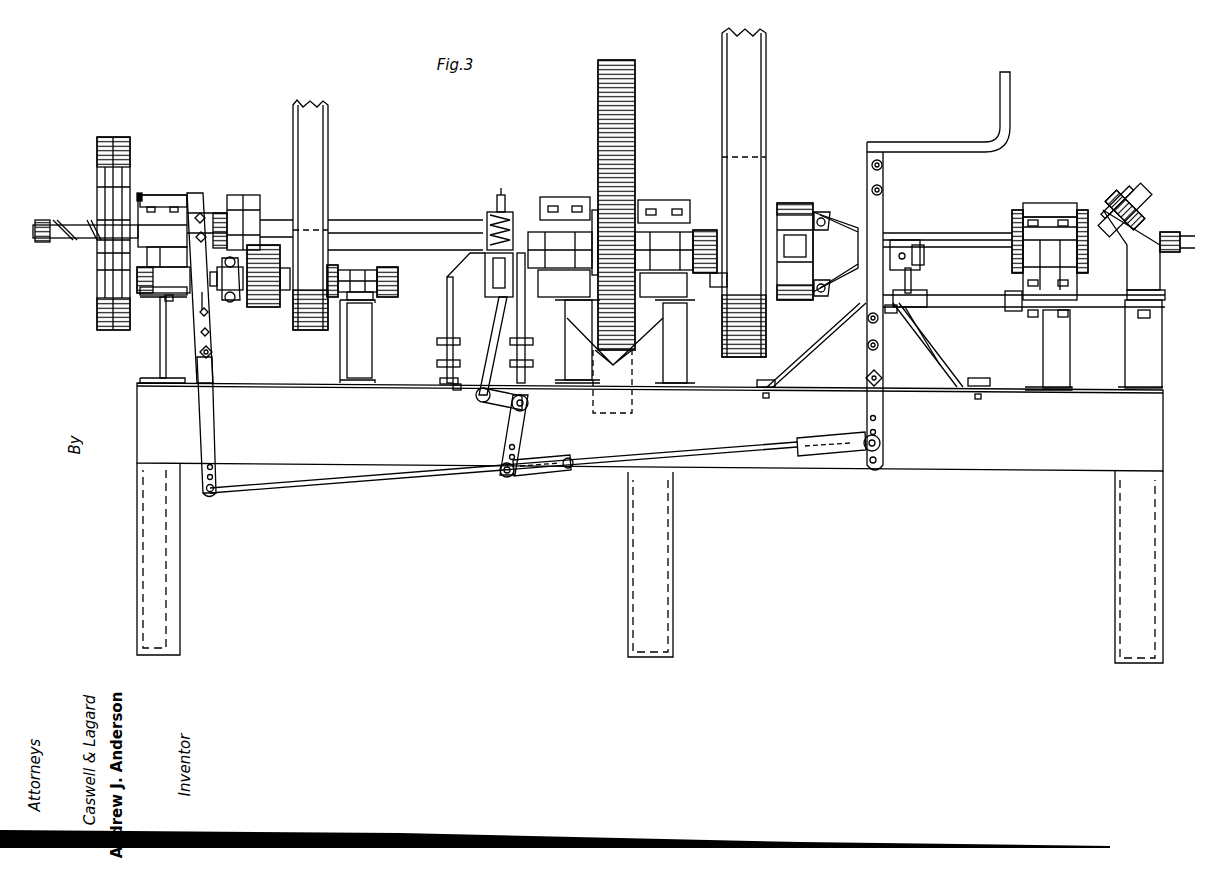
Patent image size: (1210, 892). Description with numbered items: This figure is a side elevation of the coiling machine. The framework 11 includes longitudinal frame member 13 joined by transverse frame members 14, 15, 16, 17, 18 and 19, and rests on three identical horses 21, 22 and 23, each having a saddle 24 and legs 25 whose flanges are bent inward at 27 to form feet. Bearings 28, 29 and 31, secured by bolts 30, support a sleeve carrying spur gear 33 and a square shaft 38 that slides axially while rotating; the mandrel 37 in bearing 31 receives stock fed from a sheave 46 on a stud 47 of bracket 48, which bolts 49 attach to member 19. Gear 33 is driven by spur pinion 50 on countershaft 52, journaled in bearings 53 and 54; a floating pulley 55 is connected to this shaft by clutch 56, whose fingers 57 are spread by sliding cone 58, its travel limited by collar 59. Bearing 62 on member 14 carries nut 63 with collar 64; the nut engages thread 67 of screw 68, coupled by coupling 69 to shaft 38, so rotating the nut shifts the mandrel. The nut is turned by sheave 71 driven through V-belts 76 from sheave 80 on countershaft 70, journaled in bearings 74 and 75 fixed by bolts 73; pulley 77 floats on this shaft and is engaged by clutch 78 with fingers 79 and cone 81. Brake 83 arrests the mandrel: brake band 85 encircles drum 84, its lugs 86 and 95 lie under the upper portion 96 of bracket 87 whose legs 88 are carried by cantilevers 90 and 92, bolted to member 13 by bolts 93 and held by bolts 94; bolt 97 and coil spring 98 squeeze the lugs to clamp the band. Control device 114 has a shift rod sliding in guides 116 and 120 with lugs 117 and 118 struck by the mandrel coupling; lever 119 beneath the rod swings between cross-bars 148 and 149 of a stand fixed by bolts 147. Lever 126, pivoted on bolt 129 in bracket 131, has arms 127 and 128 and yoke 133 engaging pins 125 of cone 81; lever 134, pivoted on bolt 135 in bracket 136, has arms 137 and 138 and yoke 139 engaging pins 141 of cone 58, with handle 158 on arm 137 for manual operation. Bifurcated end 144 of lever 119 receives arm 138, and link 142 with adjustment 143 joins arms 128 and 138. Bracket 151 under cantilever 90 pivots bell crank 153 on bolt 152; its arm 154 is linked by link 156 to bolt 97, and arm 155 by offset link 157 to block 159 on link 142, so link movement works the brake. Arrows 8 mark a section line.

The direction arrow 8 is at (704, 318).
The framework 11 is at (1020, 473).
The longitudinal frame member 13 is at (395, 455).
The transverse frame member 14 is at (160, 358).
The transverse frame member 15 is at (350, 340).
The transverse frame member 16 is at (572, 382).
The transverse frame member 17 is at (672, 382).
The transverse frame member 18 is at (1045, 378).
The transverse frame member 19 is at (1128, 375).
The horse 21 is at (182, 596).
The horse 22 is at (660, 598).
The horse 23 is at (1125, 572).
The saddle 24 is at (159, 559).
The leg 25 is at (172, 555).
The feet 27 is at (166, 645).
The bearing 28 is at (568, 198).
The bearing 29 is at (660, 205).
The bolts 30 is at (1063, 318).
The bearing 31 is at (1046, 210).
The spur gear 33 is at (618, 85).
The mandrel 37 is at (980, 232).
The square shaft 38 is at (395, 222).
The sheave 46 is at (1118, 195).
The stud 47 is at (1135, 200).
The bracket 48 is at (1137, 268).
The bolts 49 is at (1145, 320).
The spur pinion 50 is at (622, 308).
The countershaft 52 is at (922, 252).
The bearing 53 is at (600, 235).
The bearing 54 is at (690, 245).
The pulley 55 is at (766, 160).
The clutch 56 is at (790, 205).
The operating fingers 57 is at (823, 216).
The sliding cone 58 is at (855, 240).
The collar 59 is at (900, 244).
The bearing 62 is at (175, 200).
The nut 63 is at (140, 195).
The collar 64 is at (150, 200).
The thread 67 is at (92, 225).
The screw 68 is at (62, 245).
The coupling 69 is at (245, 200).
The countershaft 70 is at (393, 268).
The sheave 71 is at (100, 145).
The bolts 73 is at (168, 305).
The bearing 74 is at (160, 292).
The bearing 75 is at (352, 270).
The V-belts 76 is at (122, 140).
The pulley 77 is at (335, 268).
The clutch 78 is at (262, 270).
The operating fingers 79 is at (224, 250).
The sheave 80 is at (100, 285).
The sliding cone 81 is at (215, 290).
The brake 83 is at (522, 228).
The brake drum 84 is at (495, 222).
The brake band 85 is at (499, 198).
The lug 86 is at (540, 235).
The bracket 87 is at (456, 268).
The legs 88 is at (448, 290).
The cantilever 90 is at (530, 358).
The cantilever 92 is at (442, 382).
The bolts 93 is at (458, 392).
The bolts 94 is at (440, 363).
The lug 95 is at (492, 282).
The upper portion 96 is at (490, 245).
The bolt 97 is at (510, 222).
The coil spring 98 is at (497, 230).
The control device 114 is at (883, 446).
The guide 116 is at (690, 340).
The lug 117 is at (718, 275).
The lug 118 is at (914, 272).
The lever 119 is at (893, 312).
The guide 120 is at (1012, 312).
The pins 125 is at (202, 300).
The lever 126 is at (205, 410).
The upwardly extending arm 127 is at (197, 210).
The downwardly extending arm 128 is at (214, 440).
The bolt 129 is at (208, 360).
The bracket 131 is at (175, 378).
The yoke portion 133 is at (203, 345).
The lever 134 is at (866, 340).
The bolt 135 is at (884, 378).
The bracket 136 is at (866, 376).
The upwardly extending arm 137 is at (876, 160).
The downwardly extending arm 138 is at (885, 410).
The yoke 139 is at (878, 230).
The pins 141 is at (840, 245).
The link 142 is at (715, 456).
The adjustment 143 is at (812, 460).
The bifurcated end 144 is at (830, 322).
The bolts 147 is at (767, 398).
The horizontal cross-bar 148 is at (928, 295).
The second cross-bar 149 is at (915, 314).
The bracket 151 is at (528, 400).
The bolt 152 is at (490, 455).
The bell crank 153 is at (504, 478).
The arm 154 is at (492, 405).
The arm 155 is at (522, 440).
The link 156 is at (492, 320).
The offset link 157 is at (530, 478).
The handle 158 is at (572, 460).
The block 159 is at (570, 470).